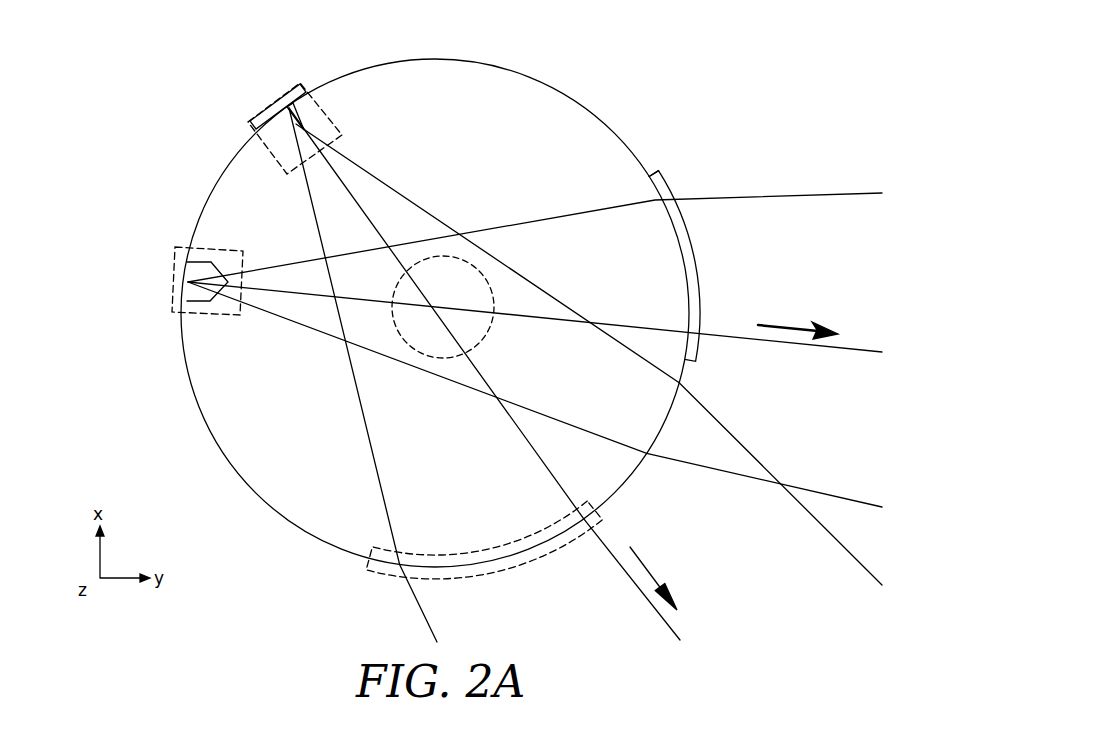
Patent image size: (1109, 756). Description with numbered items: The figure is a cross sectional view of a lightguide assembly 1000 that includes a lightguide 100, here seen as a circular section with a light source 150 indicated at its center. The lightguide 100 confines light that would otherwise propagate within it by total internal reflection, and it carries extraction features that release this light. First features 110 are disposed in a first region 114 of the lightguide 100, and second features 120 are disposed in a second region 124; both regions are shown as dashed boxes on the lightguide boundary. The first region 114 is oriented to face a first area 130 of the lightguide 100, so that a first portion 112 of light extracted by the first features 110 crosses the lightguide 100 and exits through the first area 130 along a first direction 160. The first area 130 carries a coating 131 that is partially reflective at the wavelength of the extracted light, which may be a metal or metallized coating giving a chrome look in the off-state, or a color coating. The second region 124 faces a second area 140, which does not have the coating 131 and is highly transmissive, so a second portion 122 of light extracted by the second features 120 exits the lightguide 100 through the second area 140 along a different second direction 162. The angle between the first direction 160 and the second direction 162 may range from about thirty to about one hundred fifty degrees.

The lightguide assembly 1000 is at (708, 32).
The lightguide 100 is at (580, 96).
The first features 110 is at (186, 284).
The first portion of light 112 is at (603, 210).
The first region 114 is at (176, 260).
The second features 120 is at (278, 108).
The second portion of light 122 is at (397, 360).
The second region 124 is at (282, 95).
The first area 130 is at (692, 307).
The coating 131 is at (670, 182).
The second area 140 is at (383, 562).
The light source 150 is at (436, 340).
The first direction 160 is at (790, 325).
The second direction 162 is at (646, 566).